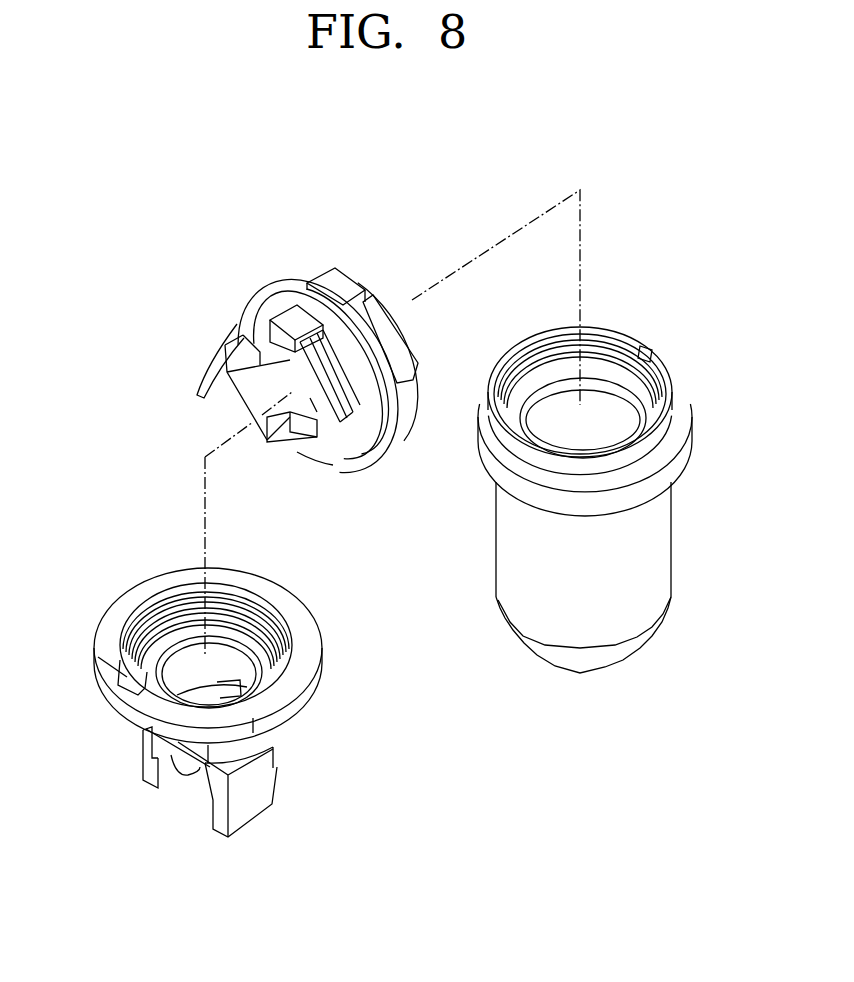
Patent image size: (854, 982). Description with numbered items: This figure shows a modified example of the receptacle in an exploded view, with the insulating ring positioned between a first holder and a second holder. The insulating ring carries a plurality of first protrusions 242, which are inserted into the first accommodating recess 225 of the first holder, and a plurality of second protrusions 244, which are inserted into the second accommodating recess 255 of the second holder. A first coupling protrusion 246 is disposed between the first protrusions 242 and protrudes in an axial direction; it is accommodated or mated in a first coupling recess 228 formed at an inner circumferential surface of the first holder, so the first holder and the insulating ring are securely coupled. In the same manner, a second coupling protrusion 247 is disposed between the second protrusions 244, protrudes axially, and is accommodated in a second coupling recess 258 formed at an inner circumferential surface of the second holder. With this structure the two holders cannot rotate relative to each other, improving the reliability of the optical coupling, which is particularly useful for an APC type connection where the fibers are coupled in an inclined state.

The first accommodating recess 225 is at (168, 632).
The first coupling recess 228 is at (120, 667).
The first protrusions 242 is at (225, 386).
The second protrusions 244 is at (333, 268).
The first coupling protrusion 246 is at (297, 317).
The second coupling protrusion 247 is at (351, 282).
The second accommodating recess 255 is at (670, 378).
The second coupling recess 258 is at (648, 346).